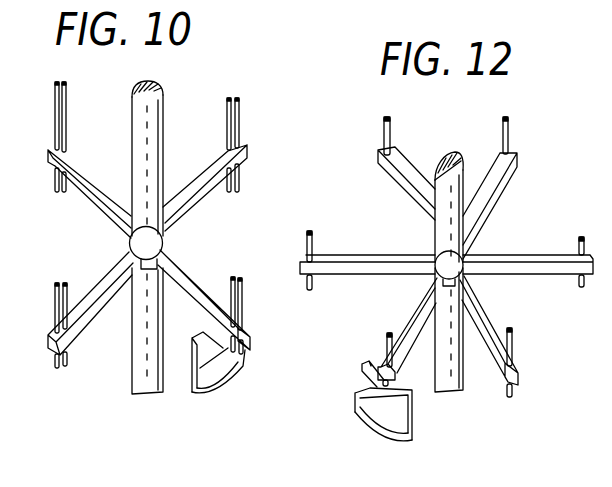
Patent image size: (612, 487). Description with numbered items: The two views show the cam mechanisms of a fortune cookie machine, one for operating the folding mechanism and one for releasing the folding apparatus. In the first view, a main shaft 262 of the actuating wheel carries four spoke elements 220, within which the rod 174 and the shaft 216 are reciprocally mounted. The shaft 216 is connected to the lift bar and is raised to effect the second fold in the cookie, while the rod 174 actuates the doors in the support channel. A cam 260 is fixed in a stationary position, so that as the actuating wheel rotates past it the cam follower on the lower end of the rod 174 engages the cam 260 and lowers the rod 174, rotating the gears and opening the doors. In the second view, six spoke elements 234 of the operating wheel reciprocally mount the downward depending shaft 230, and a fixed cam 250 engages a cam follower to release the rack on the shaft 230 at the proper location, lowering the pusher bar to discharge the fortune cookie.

In FIG. 10, the main shaft 262 is at (164, 110).
In FIG. 10, the spoke element 220 is at (195, 270).
In FIG. 10, the rod 174 is at (230, 278).
In FIG. 10, the shaft 216 is at (244, 288).
In FIG. 10, the cam 260 is at (191, 380).
In FIG. 12, the spoke element 234 is at (415, 313).
In FIG. 12, the shaft 230 is at (394, 347).
In FIG. 12, the fixed cam 250 is at (358, 398).